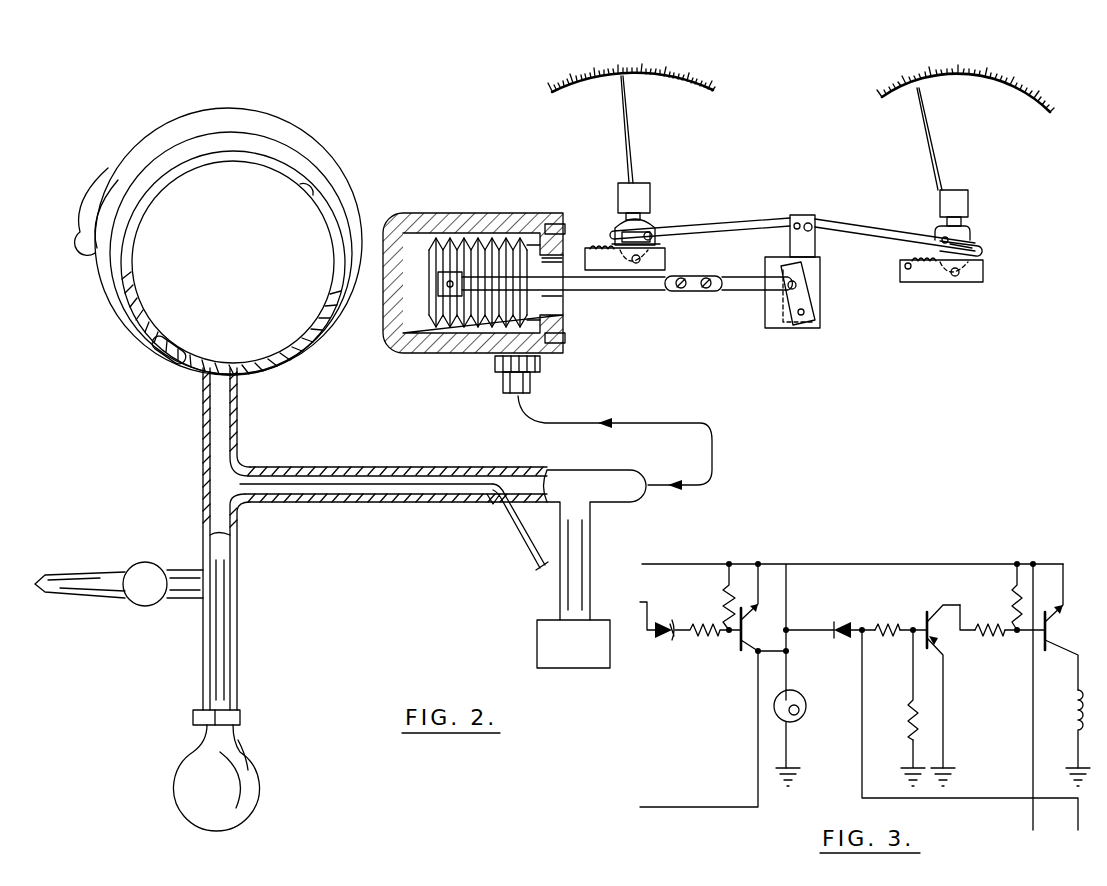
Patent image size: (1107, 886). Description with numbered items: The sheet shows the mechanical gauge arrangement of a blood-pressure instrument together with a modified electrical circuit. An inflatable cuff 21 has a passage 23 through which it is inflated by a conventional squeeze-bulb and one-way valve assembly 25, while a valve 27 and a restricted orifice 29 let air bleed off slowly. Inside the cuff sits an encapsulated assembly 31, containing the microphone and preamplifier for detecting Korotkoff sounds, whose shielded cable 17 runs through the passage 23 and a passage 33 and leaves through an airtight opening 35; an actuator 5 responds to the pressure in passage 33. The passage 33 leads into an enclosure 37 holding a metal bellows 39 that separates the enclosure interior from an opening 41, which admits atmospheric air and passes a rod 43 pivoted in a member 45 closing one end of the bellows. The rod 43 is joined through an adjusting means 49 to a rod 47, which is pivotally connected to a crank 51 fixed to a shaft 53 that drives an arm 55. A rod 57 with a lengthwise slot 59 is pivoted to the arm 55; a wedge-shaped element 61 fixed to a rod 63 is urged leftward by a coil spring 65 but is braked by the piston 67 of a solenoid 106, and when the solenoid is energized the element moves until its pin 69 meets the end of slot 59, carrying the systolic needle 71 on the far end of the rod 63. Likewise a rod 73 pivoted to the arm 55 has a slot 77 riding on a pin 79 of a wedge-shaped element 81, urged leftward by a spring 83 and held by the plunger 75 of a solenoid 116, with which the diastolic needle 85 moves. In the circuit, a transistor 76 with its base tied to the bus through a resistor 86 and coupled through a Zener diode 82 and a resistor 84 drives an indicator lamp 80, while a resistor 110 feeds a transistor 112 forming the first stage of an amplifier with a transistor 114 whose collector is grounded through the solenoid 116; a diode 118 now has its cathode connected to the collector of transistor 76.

In FIG. 2, the actuator 5 is at (580, 654).
In FIG. 2, the shielded cable 17 is at (510, 525).
In FIG. 2, the inflatable cuff 21 is at (108, 287).
In FIG. 2, the passage 23 is at (210, 454).
In FIG. 2, the squeeze-bulb and one-way valve assembly 25 is at (240, 751).
In FIG. 2, the valve 27 is at (150, 607).
In FIG. 2, the restricted orifice 29 is at (46, 578).
In FIG. 2, the assembly 31 is at (164, 346).
In FIG. 2, the passage 33 is at (420, 461).
In FIG. 2, the airtight opening 35 is at (488, 504).
In FIG. 2, the enclosure 37 is at (426, 354).
In FIG. 2, the metal bellows 39 is at (488, 236).
In FIG. 2, the opening 41 is at (557, 306).
In FIG. 2, the rod 43 is at (614, 290).
In FIG. 2, the member 45 is at (437, 291).
In FIG. 2, the rod 47 is at (742, 290).
In FIG. 2, the adjusting means 49 is at (686, 291).
In FIG. 2, the crank 51 is at (812, 292).
In FIG. 2, the shaft 53 is at (812, 315).
In FIG. 2, the arm 55 is at (816, 243).
In FIG. 2, the rod 57 is at (750, 228).
In FIG. 2, the lengthwise slot 59 is at (652, 232).
In FIG. 2, the wedge-shaped element 61 is at (612, 238).
In FIG. 2, the rod 63 is at (664, 260).
In FIG. 2, the coil spring 65 is at (610, 252).
In FIG. 2, the piston 67 is at (617, 222).
In FIG. 2, the pin 69 is at (660, 242).
In FIG. 2, the needle 71 is at (629, 153).
In FIG. 2, the rod 73 is at (870, 231).
In FIG. 2, the plunger 75 is at (962, 222).
In FIG. 2, the slot 77 is at (980, 250).
In FIG. 2, the pin 79 is at (940, 237).
In FIG. 2, the wedge-shaped element 81 is at (970, 232).
In FIG. 2, the spring 83 is at (930, 276).
In FIG. 2, the needle 85 is at (935, 156).
In FIG. 2, the solenoid 106 is at (651, 198).
In FIG. 2, the solenoid 116 is at (968, 203).
In FIG. 3, the solenoid 116 is at (1073, 711).
In FIG. 3, the transistor 76 is at (741, 648).
In FIG. 3, the indicator lamp 80 is at (806, 700).
In FIG. 3, the Zener diode 82 is at (668, 640).
In FIG. 3, the resistor 84 is at (705, 636).
In FIG. 3, the resistor 86 is at (727, 600).
In FIG. 3, the resistor 110 is at (888, 624).
In FIG. 3, the transistor 112 is at (945, 636).
In FIG. 3, the transistor 114 is at (1058, 630).
In FIG. 3, the diode 118 is at (842, 624).